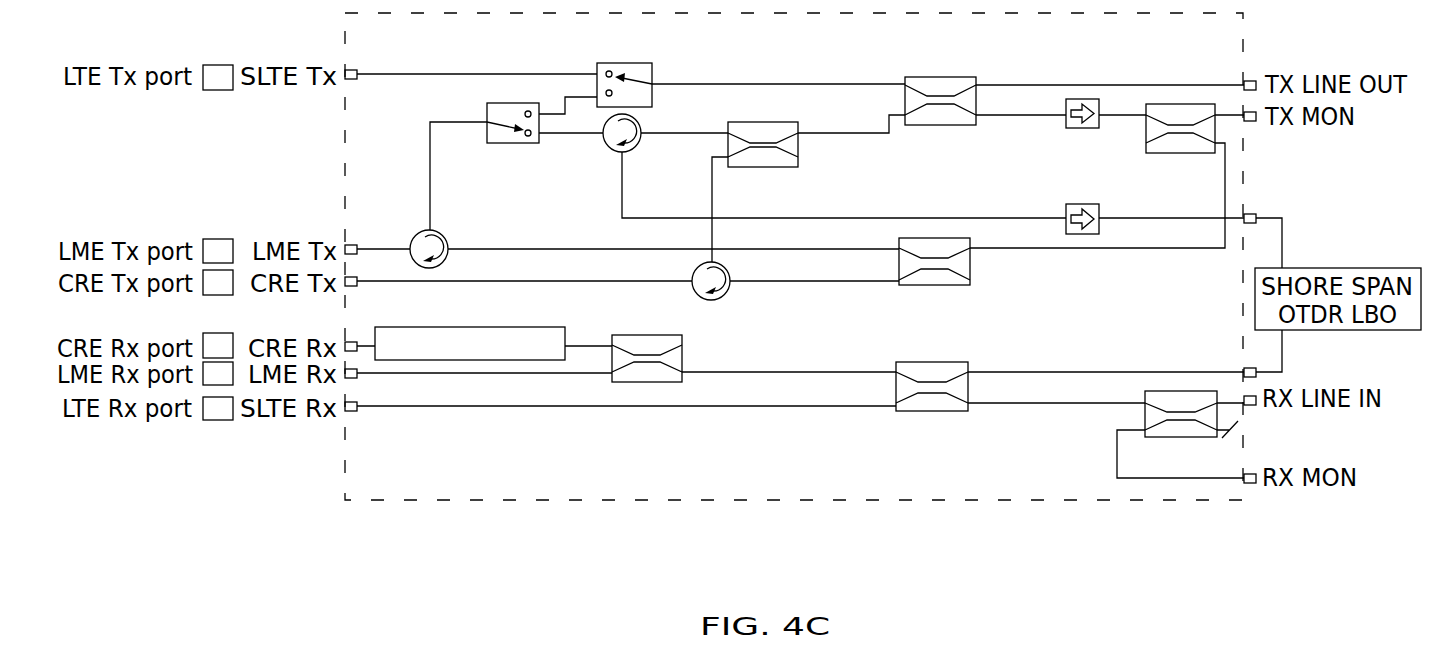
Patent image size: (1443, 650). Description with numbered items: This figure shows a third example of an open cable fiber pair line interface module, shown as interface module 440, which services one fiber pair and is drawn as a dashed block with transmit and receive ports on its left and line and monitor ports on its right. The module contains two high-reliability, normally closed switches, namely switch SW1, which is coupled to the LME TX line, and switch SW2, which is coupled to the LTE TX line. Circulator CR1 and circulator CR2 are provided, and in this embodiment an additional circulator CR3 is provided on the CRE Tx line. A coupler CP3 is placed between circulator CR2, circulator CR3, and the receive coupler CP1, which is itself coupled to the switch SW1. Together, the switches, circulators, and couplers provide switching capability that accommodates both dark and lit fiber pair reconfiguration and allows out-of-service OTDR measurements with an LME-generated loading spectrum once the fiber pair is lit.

The interface module 440 is at (793, 575).
The switch SW1 is at (513, 110).
The switch SW2 is at (624, 70).
The circulator CR1 is at (456, 236).
The circulator CR2 is at (645, 145).
The circulator CR3 is at (735, 289).
The CRE TX coupler CP1 is at (940, 73).
The coupler CP3 is at (765, 149).